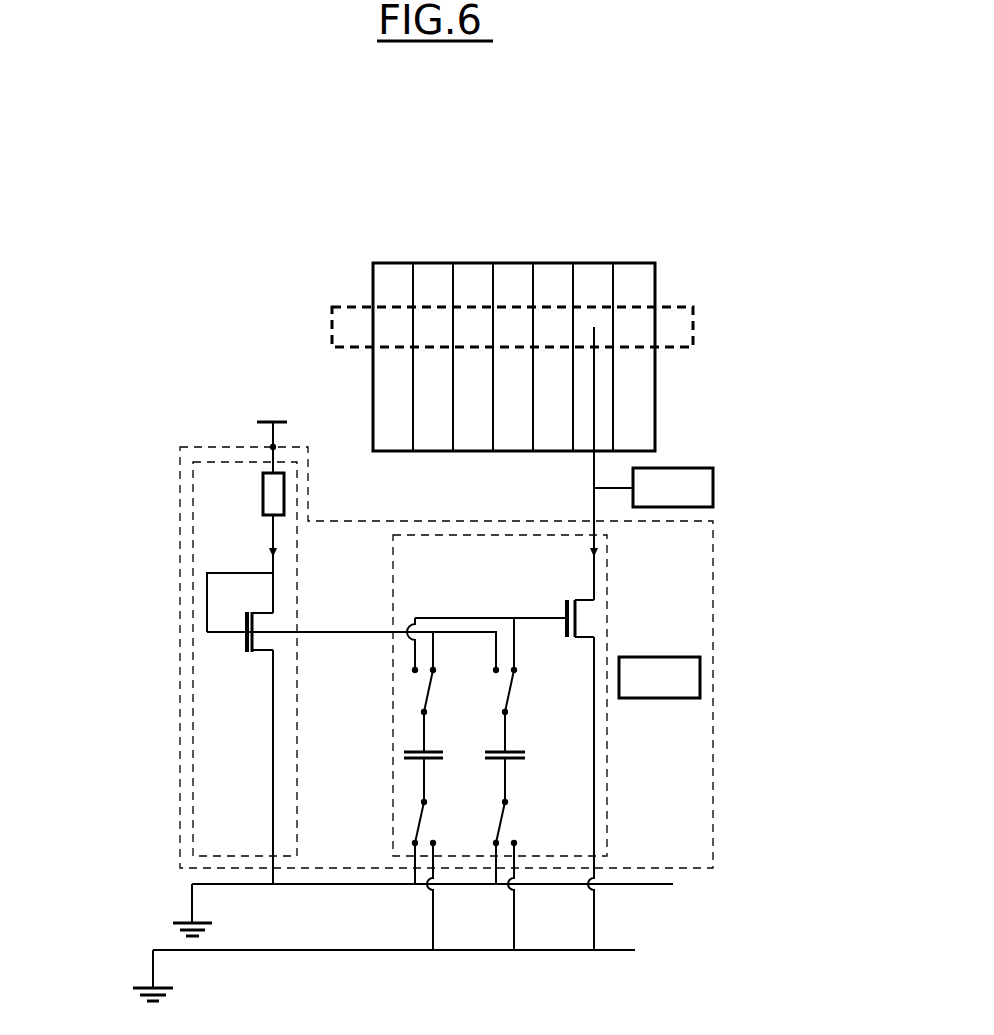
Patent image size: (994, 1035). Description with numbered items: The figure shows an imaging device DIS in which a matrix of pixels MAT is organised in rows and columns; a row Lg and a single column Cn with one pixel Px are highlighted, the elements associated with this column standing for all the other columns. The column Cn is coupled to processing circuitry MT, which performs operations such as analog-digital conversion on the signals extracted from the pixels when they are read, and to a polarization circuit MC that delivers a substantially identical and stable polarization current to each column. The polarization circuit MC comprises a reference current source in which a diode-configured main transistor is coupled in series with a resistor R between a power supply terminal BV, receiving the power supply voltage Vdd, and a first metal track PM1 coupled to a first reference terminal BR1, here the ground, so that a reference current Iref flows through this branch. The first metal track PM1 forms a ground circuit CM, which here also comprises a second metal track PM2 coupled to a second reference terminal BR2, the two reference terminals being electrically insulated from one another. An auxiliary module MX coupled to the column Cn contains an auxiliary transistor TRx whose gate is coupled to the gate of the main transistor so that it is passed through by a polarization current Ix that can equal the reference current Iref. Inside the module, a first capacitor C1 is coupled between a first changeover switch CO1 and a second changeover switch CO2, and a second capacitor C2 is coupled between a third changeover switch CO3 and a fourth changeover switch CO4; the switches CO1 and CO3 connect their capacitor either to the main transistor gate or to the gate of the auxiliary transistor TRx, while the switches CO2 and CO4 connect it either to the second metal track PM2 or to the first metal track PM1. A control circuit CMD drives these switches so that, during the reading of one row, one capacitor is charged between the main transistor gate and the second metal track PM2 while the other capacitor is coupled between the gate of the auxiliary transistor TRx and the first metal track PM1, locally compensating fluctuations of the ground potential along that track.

The matrix of pixels MAT is at (657, 273).
The row Lg is at (708, 325).
The column Cn is at (593, 276).
The pixel Px is at (604, 330).
The imaging device DIS is at (228, 342).
The power supply terminal BV is at (270, 446).
The polarization circuit MC is at (713, 705).
The power supply voltage Vdd is at (272, 434).
The resistor R is at (262, 492).
The reference current Iref is at (254, 564).
The ground circuit CM is at (153, 880).
The second reference terminal BR2 is at (172, 930).
The second metal track PM2 is at (668, 890).
The first metal track PM1 is at (630, 956).
The first reference terminal BR1 is at (131, 995).
The auxiliary transistor TRx is at (563, 598).
The polarization current Ix is at (584, 551).
The auxiliary module MX is at (610, 625).
The processing circuitry MT is at (653, 487).
The control circuit CMD is at (659, 677).
The first changeover switch CO1 is at (418, 692).
The third changeover switch CO3 is at (512, 696).
The first capacitor C1 is at (404, 750).
The second capacitor C2 is at (526, 750).
The second changeover switch CO2 is at (415, 822).
The fourth changeover switch CO4 is at (512, 820).